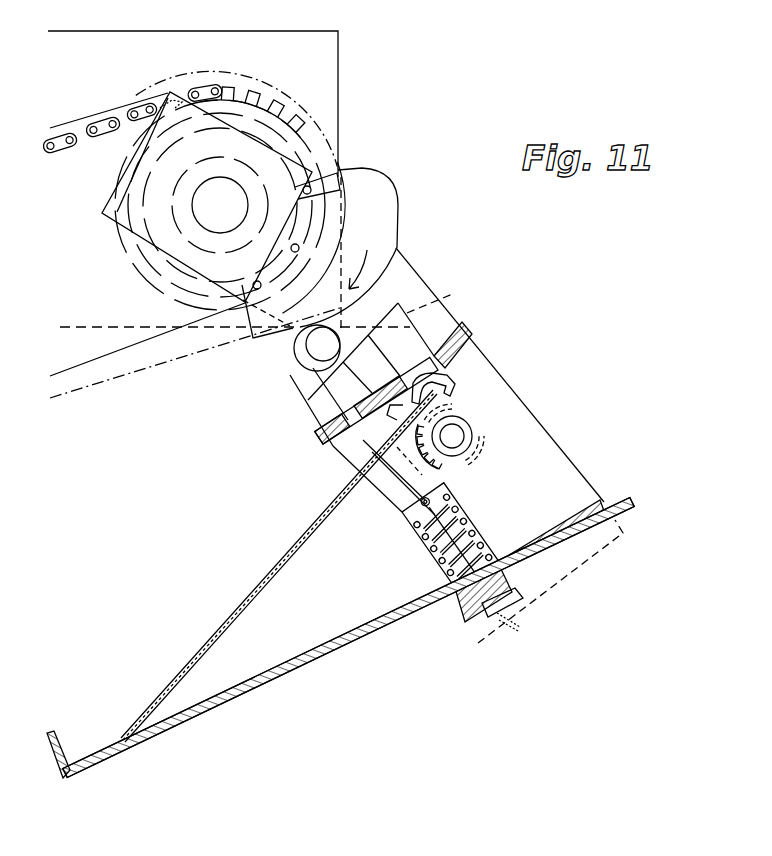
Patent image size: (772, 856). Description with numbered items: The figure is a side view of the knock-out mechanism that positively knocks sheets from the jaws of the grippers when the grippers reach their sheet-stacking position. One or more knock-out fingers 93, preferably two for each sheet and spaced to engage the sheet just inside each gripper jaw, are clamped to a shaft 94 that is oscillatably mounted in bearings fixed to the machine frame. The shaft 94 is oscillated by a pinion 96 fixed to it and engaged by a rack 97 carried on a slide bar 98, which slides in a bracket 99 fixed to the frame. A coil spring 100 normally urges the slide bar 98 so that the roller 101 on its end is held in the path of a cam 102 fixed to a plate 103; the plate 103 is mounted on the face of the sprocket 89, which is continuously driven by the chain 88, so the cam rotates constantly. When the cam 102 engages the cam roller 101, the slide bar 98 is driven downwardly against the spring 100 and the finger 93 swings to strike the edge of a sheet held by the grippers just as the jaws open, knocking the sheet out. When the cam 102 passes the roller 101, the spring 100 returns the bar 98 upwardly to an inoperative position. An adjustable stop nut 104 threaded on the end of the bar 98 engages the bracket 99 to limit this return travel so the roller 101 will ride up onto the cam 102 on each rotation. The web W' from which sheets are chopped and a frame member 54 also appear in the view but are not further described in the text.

The rail 54 is at (157, 735).
The chain 88 is at (98, 120).
The sprocket 89 is at (270, 101).
The knock-out fingers 93 is at (448, 392).
The shaft 94 is at (465, 441).
The pinion 96 is at (457, 460).
The rack 97 is at (433, 473).
The slide bar 98 is at (397, 473).
The bracket 99 is at (527, 412).
The coil spring 100 is at (418, 518).
The roller 101 is at (303, 367).
The cam 102 is at (390, 230).
The plate 103 is at (107, 215).
The adjustable stop nut 104 is at (468, 633).
The web W' is at (279, 566).